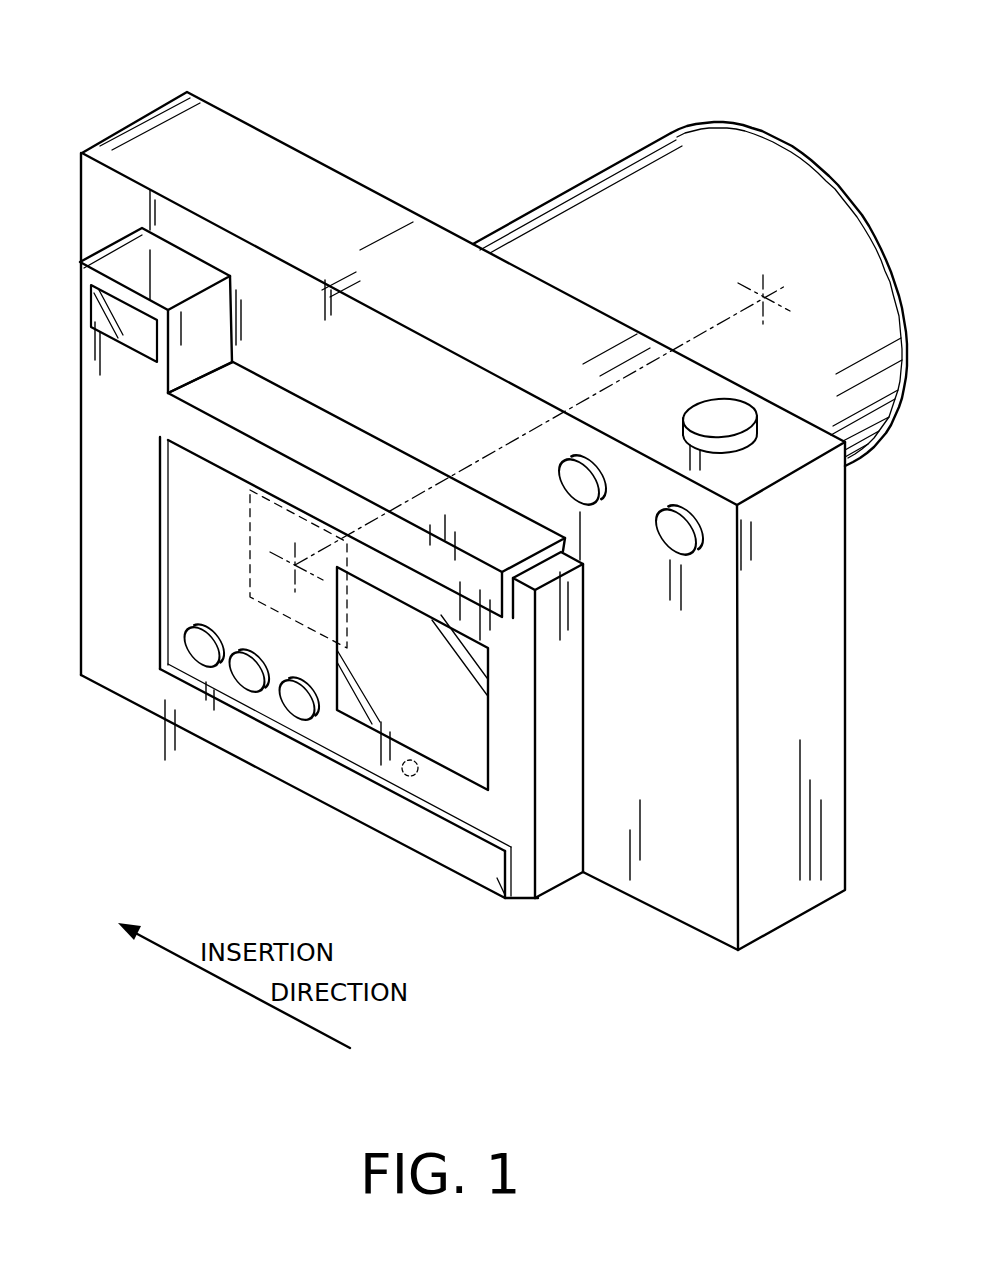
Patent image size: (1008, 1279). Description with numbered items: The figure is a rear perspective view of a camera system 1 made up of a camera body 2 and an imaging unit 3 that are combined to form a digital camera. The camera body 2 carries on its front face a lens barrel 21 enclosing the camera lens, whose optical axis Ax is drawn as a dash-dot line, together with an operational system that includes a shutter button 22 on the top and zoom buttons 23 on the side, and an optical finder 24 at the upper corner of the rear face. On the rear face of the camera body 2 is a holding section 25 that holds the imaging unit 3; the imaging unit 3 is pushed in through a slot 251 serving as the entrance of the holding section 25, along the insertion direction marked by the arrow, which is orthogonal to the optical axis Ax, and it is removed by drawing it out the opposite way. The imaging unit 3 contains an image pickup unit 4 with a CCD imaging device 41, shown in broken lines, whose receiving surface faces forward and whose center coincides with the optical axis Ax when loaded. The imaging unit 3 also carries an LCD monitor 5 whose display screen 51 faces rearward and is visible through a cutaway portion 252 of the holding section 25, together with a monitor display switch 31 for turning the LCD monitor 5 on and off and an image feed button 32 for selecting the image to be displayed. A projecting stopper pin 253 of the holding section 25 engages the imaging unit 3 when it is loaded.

The camera system 1 is at (523, 56).
The camera body 2 is at (326, 160).
The lens barrel 21 is at (627, 193).
The shutter button 22 is at (730, 417).
The zoom buttons 23 is at (583, 497).
The optical finder 24 is at (133, 347).
The holding section 25 is at (323, 487).
The slot 251 is at (520, 888).
The cutaway portion 252 is at (368, 781).
The stopper pin 253 is at (413, 785).
The imaging unit 3 is at (572, 848).
The monitor display switch 31 is at (200, 652).
The image feed button 32 is at (293, 700).
The image pickup unit 4 is at (260, 569).
The CCD imaging device 41 is at (250, 578).
The LCD monitor 5 is at (504, 684).
The display screen 51 is at (473, 732).
The optical axis Ax is at (712, 322).